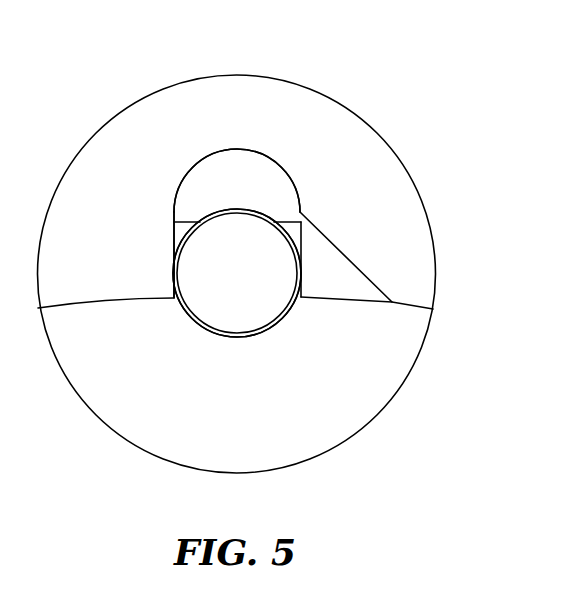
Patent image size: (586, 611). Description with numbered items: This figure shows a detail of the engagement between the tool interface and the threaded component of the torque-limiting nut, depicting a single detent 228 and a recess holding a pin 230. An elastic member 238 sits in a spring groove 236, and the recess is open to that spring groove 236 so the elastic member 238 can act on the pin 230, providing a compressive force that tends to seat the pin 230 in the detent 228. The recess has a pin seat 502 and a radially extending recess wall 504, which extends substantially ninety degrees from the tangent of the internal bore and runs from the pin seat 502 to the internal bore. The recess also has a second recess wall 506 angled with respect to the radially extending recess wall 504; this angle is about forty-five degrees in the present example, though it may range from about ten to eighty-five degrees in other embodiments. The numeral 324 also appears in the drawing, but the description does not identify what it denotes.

The pin seat 502 is at (202, 159).
The channel gap 324 is at (185, 158).
The elastic member 238 is at (238, 201).
The detent 228 is at (287, 331).
The pin 230 is at (298, 231).
The spring groove 236 is at (190, 214).
The radially extending recess wall 504 is at (173, 269).
The second recess wall 506 is at (358, 268).